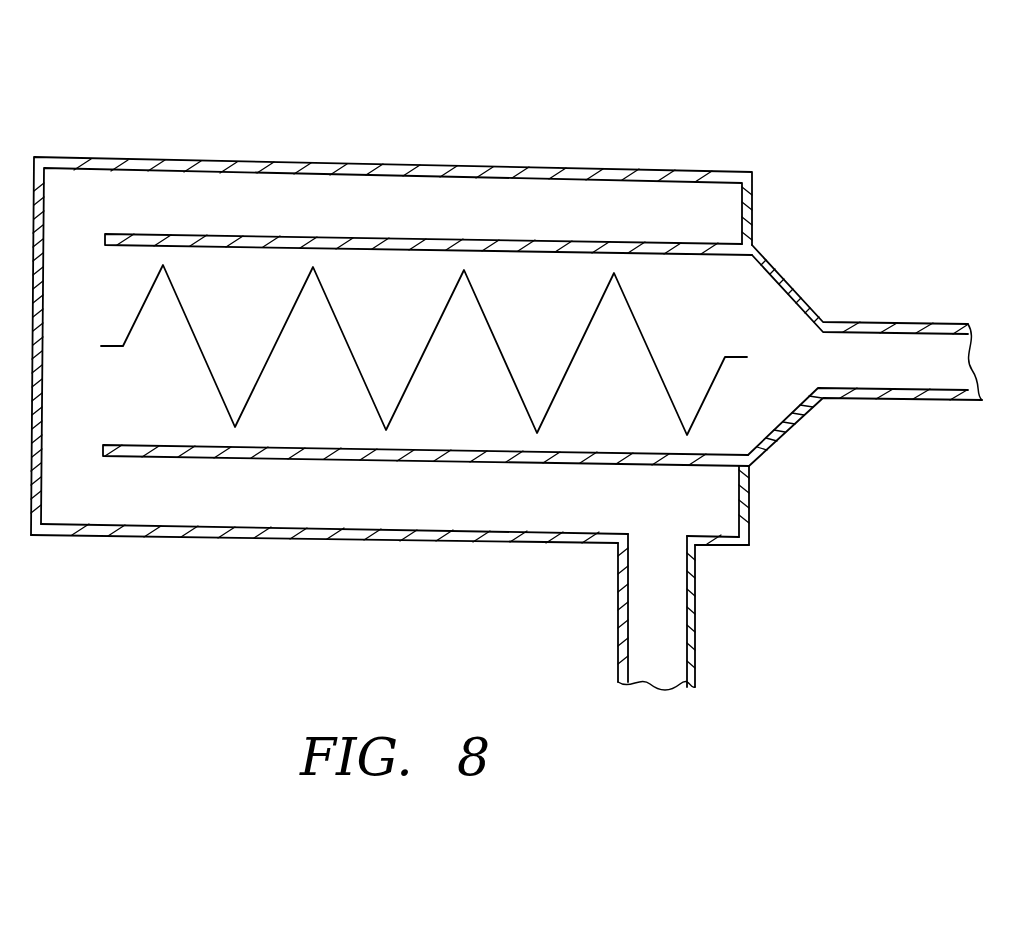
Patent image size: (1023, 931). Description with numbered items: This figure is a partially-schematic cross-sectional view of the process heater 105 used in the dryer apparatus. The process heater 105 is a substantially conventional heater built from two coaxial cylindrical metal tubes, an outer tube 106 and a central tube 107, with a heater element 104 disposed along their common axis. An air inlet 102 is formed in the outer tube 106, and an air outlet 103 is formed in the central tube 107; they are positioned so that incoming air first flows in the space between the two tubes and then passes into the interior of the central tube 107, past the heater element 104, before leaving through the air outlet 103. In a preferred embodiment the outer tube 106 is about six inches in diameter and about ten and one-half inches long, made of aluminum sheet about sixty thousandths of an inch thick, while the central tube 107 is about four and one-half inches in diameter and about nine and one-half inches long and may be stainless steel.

The air inlet 102 is at (695, 658).
The air outlet 103 is at (913, 322).
The heater element 104 is at (643, 337).
The process heater 105 is at (478, 123).
The outer tube 106 is at (195, 537).
The central tube 107 is at (265, 233).